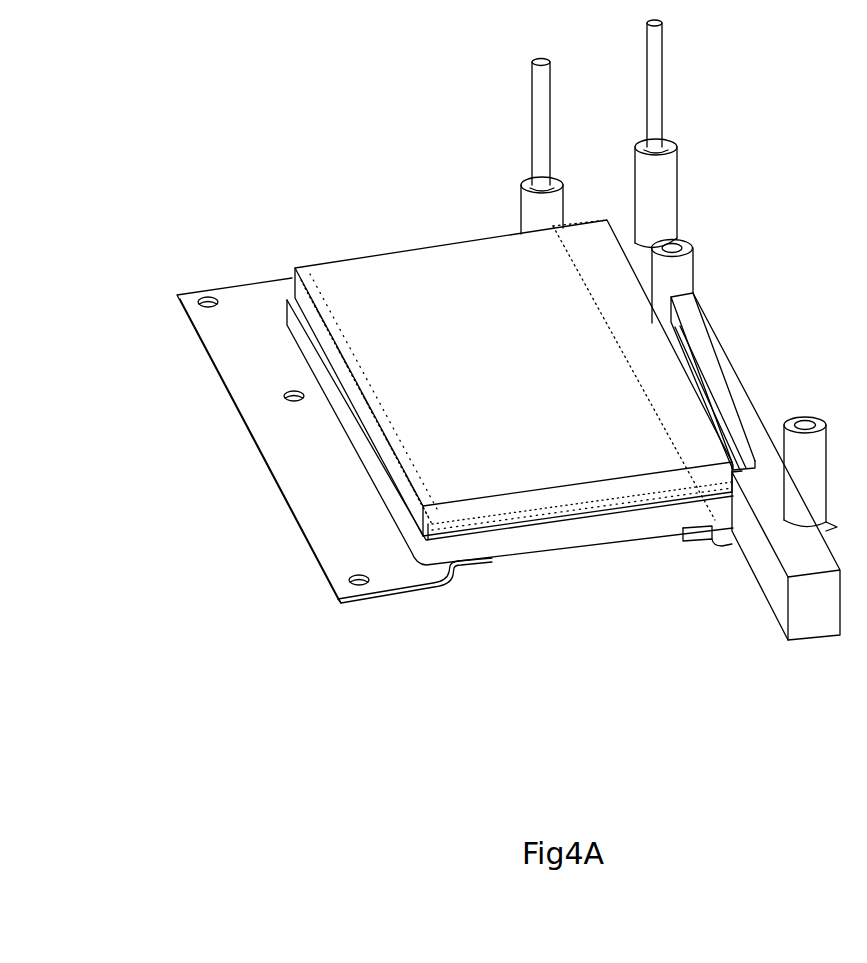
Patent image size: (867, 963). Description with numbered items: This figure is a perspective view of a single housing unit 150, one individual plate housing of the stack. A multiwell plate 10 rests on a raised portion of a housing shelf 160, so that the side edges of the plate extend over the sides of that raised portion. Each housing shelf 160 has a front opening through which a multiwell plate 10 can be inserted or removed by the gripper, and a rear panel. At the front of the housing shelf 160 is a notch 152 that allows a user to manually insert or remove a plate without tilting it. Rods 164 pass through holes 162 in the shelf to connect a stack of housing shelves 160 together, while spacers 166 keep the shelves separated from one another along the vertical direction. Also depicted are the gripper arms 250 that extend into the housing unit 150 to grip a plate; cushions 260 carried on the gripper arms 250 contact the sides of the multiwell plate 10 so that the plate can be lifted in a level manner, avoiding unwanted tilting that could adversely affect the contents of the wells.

The multiwell plate 10 is at (534, 359).
The housing unit 150 is at (340, 218).
The notch 152 is at (585, 553).
The housing shelf 160 is at (262, 408).
The holes 162 is at (193, 290).
The rods 164 is at (657, 80).
The spacers 166 is at (662, 186).
The gripper arms 250 is at (707, 342).
The cushions 260 is at (687, 345).